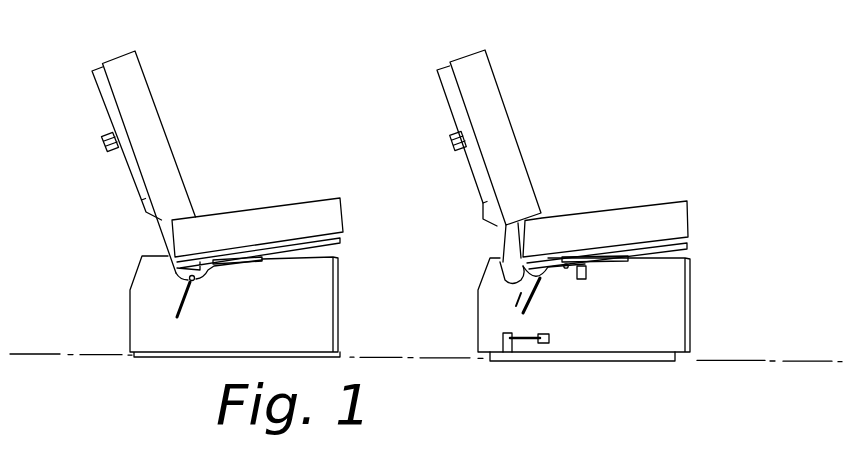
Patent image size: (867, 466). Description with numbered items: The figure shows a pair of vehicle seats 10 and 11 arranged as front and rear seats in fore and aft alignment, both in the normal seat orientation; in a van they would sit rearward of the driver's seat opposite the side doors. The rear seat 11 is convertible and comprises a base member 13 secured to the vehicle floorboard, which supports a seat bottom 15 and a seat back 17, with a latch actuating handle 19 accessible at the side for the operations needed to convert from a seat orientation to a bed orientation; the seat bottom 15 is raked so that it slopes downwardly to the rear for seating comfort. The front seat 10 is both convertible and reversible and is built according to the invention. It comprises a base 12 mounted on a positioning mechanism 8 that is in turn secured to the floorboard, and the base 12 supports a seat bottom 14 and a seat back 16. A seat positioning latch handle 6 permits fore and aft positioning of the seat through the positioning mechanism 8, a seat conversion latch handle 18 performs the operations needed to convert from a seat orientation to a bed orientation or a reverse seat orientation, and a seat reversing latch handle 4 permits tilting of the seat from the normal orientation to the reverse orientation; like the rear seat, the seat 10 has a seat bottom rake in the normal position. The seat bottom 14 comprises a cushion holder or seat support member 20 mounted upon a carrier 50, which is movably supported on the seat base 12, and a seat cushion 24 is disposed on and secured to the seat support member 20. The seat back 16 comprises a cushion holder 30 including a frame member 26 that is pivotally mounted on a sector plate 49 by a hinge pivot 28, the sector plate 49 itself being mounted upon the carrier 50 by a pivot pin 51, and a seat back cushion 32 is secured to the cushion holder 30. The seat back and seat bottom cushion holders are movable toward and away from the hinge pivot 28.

The seat reversing latch handle 4 is at (588, 278).
The seat positioning latch handle 6 is at (528, 335).
The positioning mechanism 8 is at (665, 366).
The seat 10 is at (601, 180).
The seat 11 is at (262, 195).
The base 12 is at (698, 323).
The base member 13 is at (347, 294).
The seat bottom 14 is at (698, 197).
The seat bottom 15 is at (347, 220).
The seat back 16 is at (504, 92).
The seat back 17 is at (118, 53).
The seat conversion latch handle 18 is at (530, 307).
The latch actuating handle 19 is at (181, 310).
The seat support member 20 is at (690, 247).
The seat cushion 24 is at (690, 220).
The frame member 26 is at (503, 240).
The hinge pivot 28 is at (517, 278).
The cushion holder 30 is at (475, 158).
The seat back cushion 32 is at (517, 193).
The sector plate 49 is at (502, 268).
The carrier 50 is at (566, 265).
The pivot pin 51 is at (518, 292).